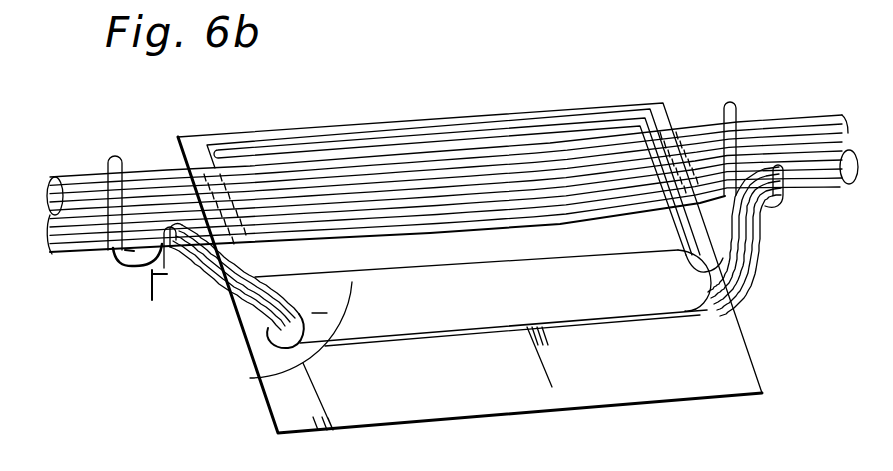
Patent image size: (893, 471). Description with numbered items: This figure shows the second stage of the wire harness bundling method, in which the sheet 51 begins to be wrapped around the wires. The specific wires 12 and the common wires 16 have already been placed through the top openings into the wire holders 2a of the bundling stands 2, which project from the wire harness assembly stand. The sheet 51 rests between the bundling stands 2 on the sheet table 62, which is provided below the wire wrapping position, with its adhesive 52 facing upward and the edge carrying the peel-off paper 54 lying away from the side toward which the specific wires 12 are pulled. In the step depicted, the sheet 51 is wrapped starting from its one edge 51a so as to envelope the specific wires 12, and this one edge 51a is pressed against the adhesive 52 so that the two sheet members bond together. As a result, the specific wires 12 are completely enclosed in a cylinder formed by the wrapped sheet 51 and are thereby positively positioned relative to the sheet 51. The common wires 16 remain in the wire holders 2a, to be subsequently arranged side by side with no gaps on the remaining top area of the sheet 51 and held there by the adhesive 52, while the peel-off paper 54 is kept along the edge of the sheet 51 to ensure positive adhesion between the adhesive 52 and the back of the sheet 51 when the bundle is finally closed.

The bundling stand 2 is at (133, 281).
The wire holder 2a is at (112, 258).
The specific wire 12 is at (757, 250).
The common wire 16 is at (696, 120).
The sheet 51 is at (678, 294).
The one edge of the sheet 51a is at (268, 376).
The adhesive 52 is at (246, 268).
The peel-off paper 54 is at (622, 120).
The sheet table 62 is at (717, 351).